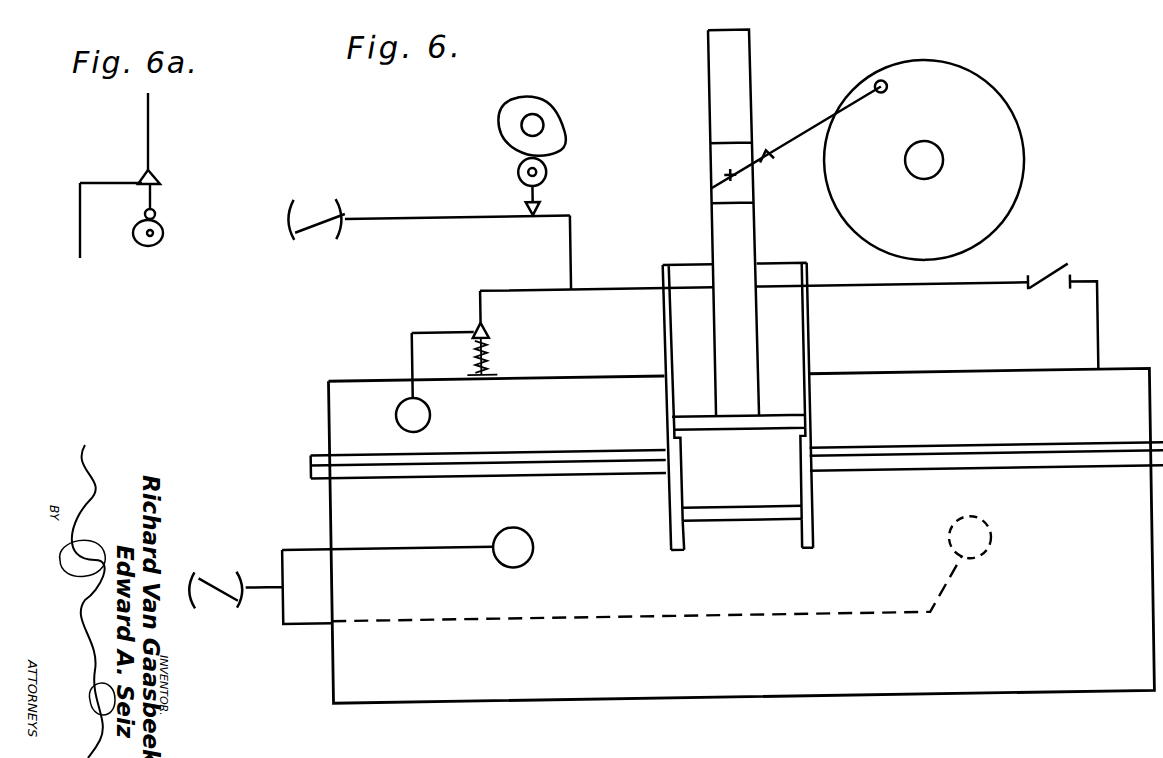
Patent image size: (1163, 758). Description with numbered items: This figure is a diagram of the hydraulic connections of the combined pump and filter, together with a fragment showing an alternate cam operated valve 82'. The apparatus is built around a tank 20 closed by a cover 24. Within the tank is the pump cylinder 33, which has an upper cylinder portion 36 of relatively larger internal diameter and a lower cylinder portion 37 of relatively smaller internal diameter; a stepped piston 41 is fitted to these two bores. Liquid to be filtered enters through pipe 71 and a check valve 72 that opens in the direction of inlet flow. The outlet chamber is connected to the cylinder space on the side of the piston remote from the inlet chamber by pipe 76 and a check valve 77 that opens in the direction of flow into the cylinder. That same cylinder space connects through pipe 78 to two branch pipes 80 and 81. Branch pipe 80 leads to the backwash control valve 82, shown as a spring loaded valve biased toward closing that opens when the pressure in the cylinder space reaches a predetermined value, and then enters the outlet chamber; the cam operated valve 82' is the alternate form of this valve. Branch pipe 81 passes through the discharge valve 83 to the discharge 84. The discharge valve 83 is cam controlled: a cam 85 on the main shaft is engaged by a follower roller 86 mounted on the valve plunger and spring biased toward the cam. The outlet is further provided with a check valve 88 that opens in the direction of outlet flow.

In FIG. 6, the tank 20 is at (1082, 556).
In FIG. 6, the cover 24 is at (1000, 427).
In FIG. 6, the pump cylinder 33 is at (808, 348).
In FIG. 6, the upper cylinder portion 36 is at (757, 320).
In FIG. 6, the lower cylinder portion 37 is at (799, 517).
In FIG. 6, the piston 41 is at (740, 475).
In FIG. 6, the pipe 71 is at (254, 584).
In FIG. 6, the check valve 72 is at (219, 580).
In FIG. 6, the pipe 76 is at (1098, 313).
In FIG. 6, the check valve 77 is at (1058, 274).
In FIG. 6, the pipe 78 is at (640, 288).
In FIG. 6A, the branch pipe 80 is at (150, 153).
In FIG. 6, the branch pipe 80 is at (479, 304).
In FIG. 6, the branch pipe 81 is at (573, 247).
In FIG. 6, the backwash control valve 82 is at (471, 376).
In FIG. 6A, the cam operated valve 82' is at (175, 208).
In FIG. 6, the discharge valve 83 is at (542, 208).
In FIG. 6, the discharge 84 is at (347, 212).
In FIG. 6, the cam 85 is at (540, 106).
In FIG. 6, the follower roller 86 is at (519, 170).
In FIG. 6, the check valve 88 is at (326, 211).